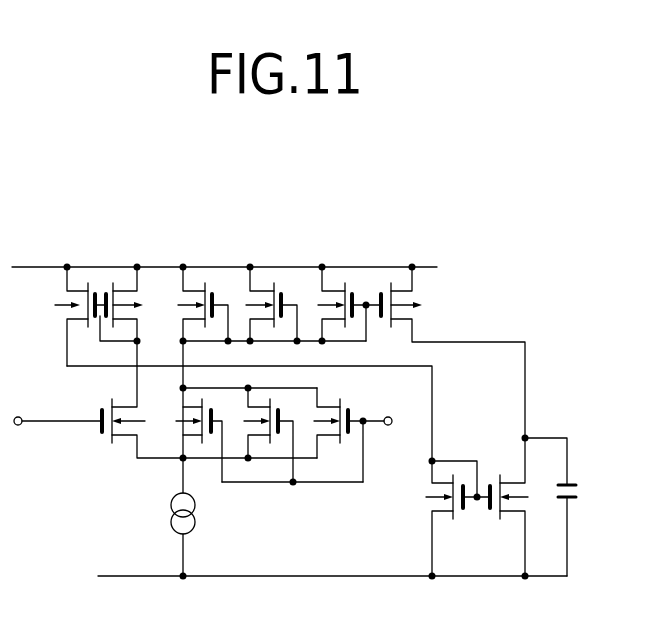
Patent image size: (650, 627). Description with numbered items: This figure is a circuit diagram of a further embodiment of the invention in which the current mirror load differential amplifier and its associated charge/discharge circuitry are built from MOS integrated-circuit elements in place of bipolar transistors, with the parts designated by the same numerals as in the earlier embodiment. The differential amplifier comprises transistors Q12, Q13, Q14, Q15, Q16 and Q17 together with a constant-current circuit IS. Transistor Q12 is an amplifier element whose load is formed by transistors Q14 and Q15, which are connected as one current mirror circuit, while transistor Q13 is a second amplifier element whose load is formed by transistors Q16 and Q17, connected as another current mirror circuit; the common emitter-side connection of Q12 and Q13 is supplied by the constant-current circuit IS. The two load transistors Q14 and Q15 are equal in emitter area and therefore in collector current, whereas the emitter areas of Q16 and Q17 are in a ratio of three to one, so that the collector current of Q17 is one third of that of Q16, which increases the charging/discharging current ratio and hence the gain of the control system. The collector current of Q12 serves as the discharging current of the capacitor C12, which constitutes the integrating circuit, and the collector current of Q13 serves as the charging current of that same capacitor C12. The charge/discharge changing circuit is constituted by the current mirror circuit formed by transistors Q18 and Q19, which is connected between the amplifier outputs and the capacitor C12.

The transistor Q12 is at (123, 437).
The transistor Q13 is at (283, 513).
The transistor Q14 is at (57, 297).
The transistor Q15 is at (143, 300).
The transistor Q16 is at (303, 251).
The transistor Q17 is at (427, 308).
The transistor Q18 is at (460, 517).
The transistor Q19 is at (502, 517).
The capacitor C12 is at (578, 491).
The constant-current circuit IS is at (185, 535).